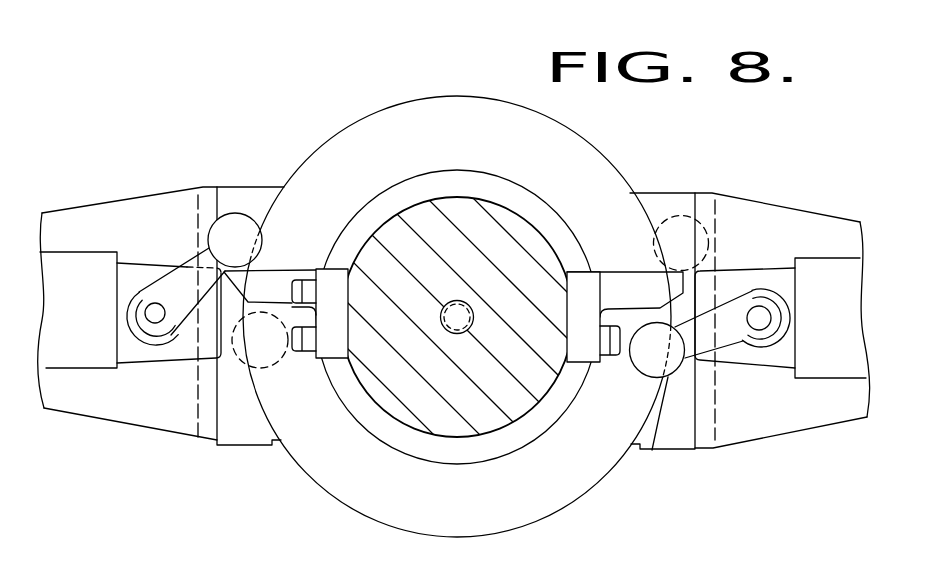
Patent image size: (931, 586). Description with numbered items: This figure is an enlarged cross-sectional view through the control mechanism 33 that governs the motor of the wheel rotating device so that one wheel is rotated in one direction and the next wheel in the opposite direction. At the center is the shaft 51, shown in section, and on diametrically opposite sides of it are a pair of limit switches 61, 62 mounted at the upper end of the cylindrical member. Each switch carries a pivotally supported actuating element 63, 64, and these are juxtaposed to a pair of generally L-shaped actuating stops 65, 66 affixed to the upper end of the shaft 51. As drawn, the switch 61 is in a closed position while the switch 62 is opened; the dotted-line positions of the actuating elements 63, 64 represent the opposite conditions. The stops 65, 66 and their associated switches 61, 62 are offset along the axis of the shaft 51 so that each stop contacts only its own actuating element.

The control mechanism 33 is at (660, 164).
The shaft 51 is at (532, 223).
The limit switch 61 is at (77, 250).
The limit switch 62 is at (802, 258).
The actuating element 63 is at (241, 213).
The actuating element 64 is at (675, 212).
The actuating stop 65 is at (284, 268).
The actuating stop 66 is at (604, 269).